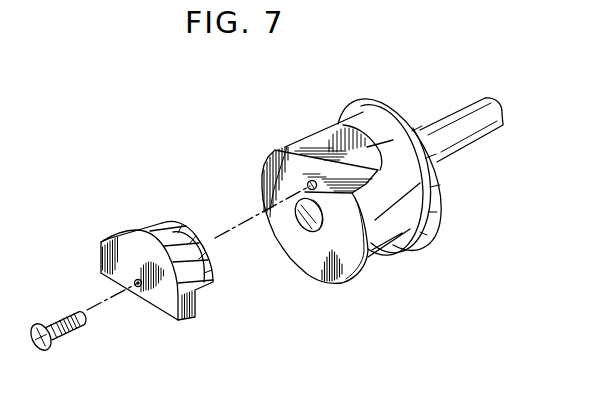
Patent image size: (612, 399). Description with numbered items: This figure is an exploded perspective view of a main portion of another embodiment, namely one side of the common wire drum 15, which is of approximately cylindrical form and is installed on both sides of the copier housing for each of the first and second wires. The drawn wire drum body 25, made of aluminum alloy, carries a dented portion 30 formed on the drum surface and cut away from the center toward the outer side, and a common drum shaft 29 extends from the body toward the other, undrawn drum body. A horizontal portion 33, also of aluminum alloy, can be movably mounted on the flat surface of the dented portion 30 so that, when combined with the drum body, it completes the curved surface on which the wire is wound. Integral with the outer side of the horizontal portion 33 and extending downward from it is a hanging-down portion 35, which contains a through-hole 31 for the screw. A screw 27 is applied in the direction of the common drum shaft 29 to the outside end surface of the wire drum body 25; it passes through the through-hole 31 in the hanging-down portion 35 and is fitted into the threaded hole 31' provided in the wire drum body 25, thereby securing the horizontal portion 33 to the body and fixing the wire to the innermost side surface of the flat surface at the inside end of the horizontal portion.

The common wire drum 15 is at (371, 285).
The wire drum body 25 is at (387, 220).
The screw 27 is at (70, 331).
The common drum shaft 29 is at (475, 132).
The dented portion 30 is at (309, 152).
The through-hole 31 is at (150, 325).
The threaded hole 31' is at (267, 156).
The horizontal portion 33 is at (185, 240).
The hanging-down portion 35 is at (100, 257).